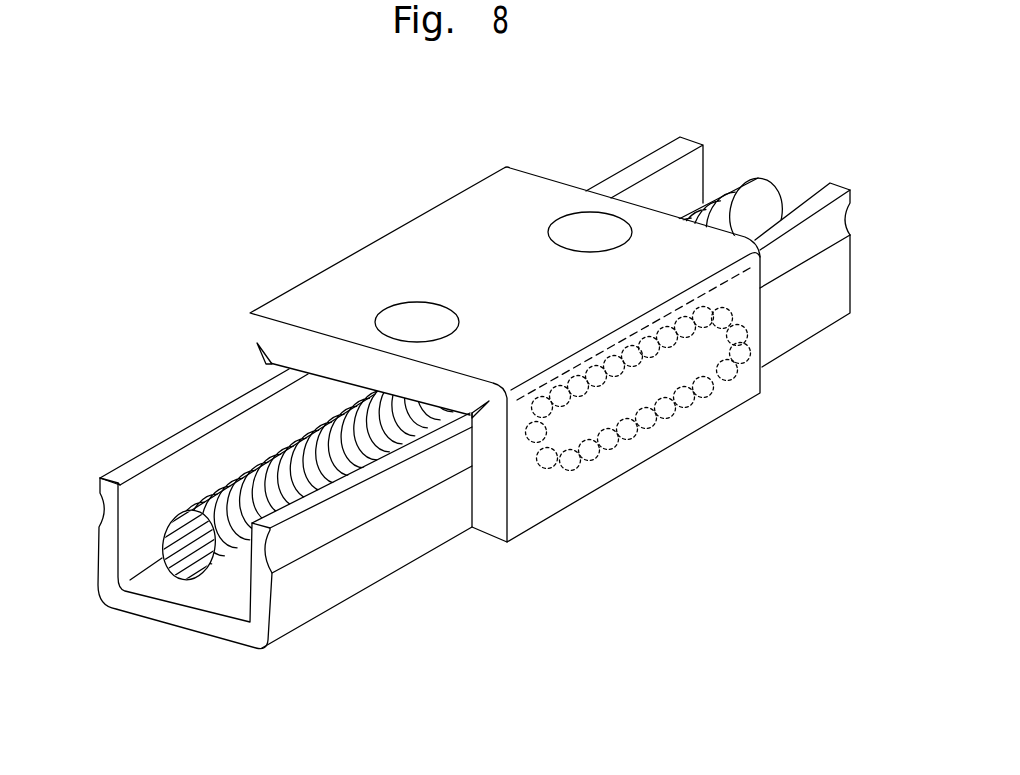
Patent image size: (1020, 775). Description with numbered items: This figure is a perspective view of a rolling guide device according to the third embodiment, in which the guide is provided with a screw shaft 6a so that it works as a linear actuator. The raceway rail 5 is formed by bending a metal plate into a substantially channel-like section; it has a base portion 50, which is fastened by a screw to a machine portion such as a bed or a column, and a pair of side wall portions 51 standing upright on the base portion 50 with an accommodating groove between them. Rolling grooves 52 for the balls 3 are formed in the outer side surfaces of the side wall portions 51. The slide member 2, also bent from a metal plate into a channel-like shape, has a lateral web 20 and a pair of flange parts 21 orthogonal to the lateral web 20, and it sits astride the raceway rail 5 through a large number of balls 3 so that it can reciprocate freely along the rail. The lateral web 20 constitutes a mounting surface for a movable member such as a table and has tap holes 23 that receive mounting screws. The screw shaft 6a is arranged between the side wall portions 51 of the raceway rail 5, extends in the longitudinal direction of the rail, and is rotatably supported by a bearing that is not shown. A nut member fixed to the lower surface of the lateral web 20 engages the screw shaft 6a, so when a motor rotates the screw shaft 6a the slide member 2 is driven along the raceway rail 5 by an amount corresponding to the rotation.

The slide member 2 is at (505, 356).
The lateral web 20 is at (328, 352).
The flange part 21 is at (488, 520).
The tap hole 23 is at (412, 317).
The ball 3 is at (638, 423).
The raceway rail 5 is at (445, 417).
The base portion 50 is at (140, 605).
The side wall portion 51 is at (165, 447).
The rolling groove 52 is at (106, 510).
The screw shaft 6a is at (195, 567).